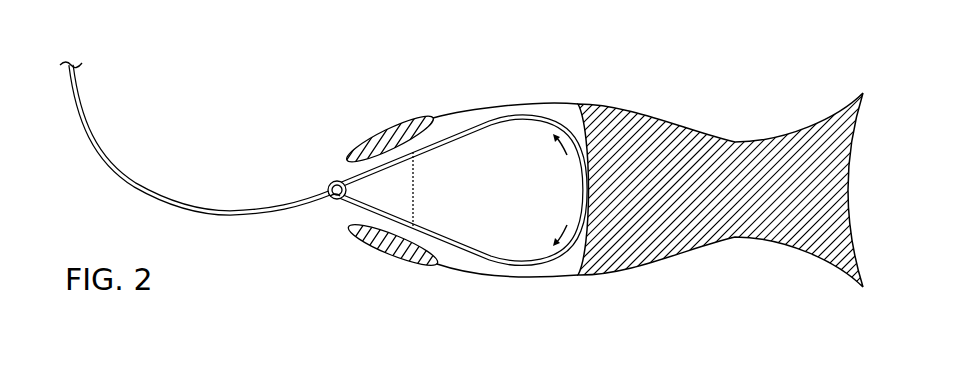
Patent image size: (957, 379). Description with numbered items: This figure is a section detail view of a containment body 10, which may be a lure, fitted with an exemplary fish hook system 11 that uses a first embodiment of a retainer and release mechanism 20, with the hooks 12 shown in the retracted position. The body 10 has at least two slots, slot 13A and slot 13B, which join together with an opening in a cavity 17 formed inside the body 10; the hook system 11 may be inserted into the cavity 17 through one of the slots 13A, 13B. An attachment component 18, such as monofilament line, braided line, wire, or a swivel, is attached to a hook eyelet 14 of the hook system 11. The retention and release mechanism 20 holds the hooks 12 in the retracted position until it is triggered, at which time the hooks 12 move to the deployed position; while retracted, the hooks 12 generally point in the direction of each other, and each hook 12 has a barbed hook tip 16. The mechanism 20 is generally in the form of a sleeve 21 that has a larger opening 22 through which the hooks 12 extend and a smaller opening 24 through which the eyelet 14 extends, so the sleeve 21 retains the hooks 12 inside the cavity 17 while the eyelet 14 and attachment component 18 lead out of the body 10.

The containment body 10 is at (655, 118).
The fish hook system 11 is at (557, 185).
The hooks 12 is at (490, 118).
The slot 13A is at (557, 98).
The slot 13B is at (532, 290).
The hook eyelet 14 is at (331, 180).
The barbed hook tip 16 is at (560, 148).
The cavity 17 is at (552, 206).
The attachment component 18 is at (150, 193).
The retainer and release mechanism 20 is at (382, 138).
The sleeve 21 is at (397, 200).
The larger opening 22 is at (418, 197).
The smaller opening 24 is at (334, 199).